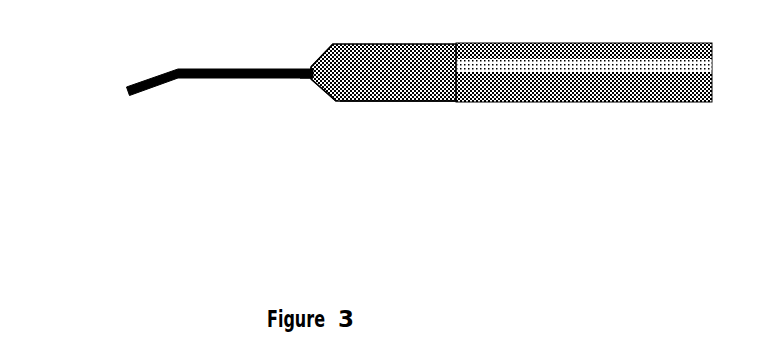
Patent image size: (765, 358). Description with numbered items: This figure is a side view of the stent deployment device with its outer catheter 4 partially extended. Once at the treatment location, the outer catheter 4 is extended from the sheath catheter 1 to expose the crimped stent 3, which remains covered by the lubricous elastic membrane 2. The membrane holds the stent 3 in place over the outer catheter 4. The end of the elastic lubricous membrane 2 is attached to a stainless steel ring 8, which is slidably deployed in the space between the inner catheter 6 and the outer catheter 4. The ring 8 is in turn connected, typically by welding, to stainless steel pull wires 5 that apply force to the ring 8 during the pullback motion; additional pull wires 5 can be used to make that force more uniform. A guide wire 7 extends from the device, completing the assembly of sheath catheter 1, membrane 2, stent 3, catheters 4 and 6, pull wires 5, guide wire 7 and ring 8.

The sheath catheter 1 is at (517, 103).
The elastic lubricous membrane 2 is at (363, 101).
The stent 3 is at (384, 78).
The outer catheter 4 is at (330, 99).
The pull wires 5 is at (325, 55).
The inner catheter 6 is at (306, 76).
The guide wire 7 is at (233, 75).
The ring 8 is at (313, 72).